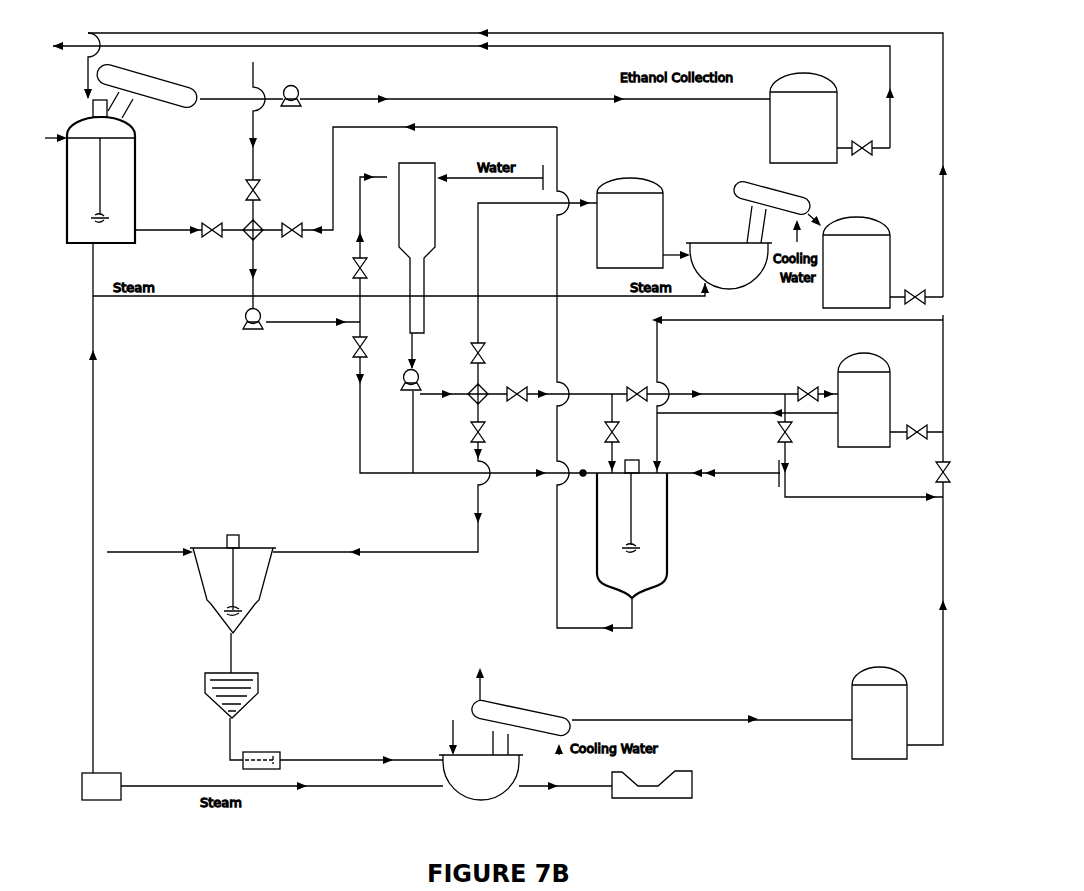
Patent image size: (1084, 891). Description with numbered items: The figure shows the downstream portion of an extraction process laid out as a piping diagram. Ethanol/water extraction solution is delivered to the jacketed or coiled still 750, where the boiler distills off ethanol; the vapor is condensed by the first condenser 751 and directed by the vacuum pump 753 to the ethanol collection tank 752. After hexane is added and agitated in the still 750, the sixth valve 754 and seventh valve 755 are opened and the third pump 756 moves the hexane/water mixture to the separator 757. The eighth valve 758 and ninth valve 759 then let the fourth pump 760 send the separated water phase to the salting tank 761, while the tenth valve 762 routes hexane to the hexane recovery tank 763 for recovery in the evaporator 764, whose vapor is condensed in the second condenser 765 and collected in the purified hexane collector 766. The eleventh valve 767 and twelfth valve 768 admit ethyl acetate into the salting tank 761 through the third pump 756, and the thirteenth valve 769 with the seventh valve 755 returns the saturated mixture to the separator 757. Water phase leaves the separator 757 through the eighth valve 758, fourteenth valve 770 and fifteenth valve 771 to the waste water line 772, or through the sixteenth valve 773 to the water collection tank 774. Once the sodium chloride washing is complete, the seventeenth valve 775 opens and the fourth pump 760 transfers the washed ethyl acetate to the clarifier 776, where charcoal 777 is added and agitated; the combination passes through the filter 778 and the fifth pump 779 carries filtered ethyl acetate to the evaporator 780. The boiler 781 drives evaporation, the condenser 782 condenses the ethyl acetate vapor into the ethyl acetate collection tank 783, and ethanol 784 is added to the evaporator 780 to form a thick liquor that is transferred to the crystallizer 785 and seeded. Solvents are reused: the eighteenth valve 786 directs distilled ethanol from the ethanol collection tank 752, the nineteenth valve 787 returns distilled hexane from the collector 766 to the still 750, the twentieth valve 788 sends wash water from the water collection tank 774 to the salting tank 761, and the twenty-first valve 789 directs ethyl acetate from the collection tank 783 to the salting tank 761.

The jacketed or coiled still 750 is at (101, 171).
The first condenser 751 is at (147, 86).
The ethanol collection tank 752 is at (803, 118).
The vacuum pump 753 is at (305, 94).
The sixth valve 754 is at (206, 223).
The seventh valve 755 is at (346, 262).
The third pump 756 is at (242, 318).
The separator 757 is at (417, 248).
The eighth valve 758 is at (522, 386).
The ninth valve 759 is at (600, 426).
The fourth pump 760 is at (393, 383).
The salting tank 761 is at (632, 529).
The tenth valve 762 is at (490, 350).
The hexane recovery tank 763 is at (630, 223).
The evaporator 764 is at (729, 266).
The second condenser 765 is at (772, 198).
The purified hexane collector 766 is at (856, 262).
The eleventh valve 767 is at (264, 185).
The twelfth valve 768 is at (342, 347).
The thirteenth valve 769 is at (293, 223).
The fourteenth valve 770 is at (627, 386).
The fifteenth valve 771 is at (767, 426).
The waste water line 772 is at (862, 471).
The sixteenth valve 773 is at (807, 383).
The water collection tank 774 is at (864, 400).
The seventeenth valve 775 is at (495, 433).
The clarifier 776 is at (233, 584).
The charcoal 777 is at (150, 543).
The filter 778 is at (207, 695).
The fifth pump 779 is at (257, 749).
The evaporator 780 is at (481, 777).
The boiler 781 is at (101, 786).
The condenser 782 is at (521, 716).
The ethyl acetate collection tank 783 is at (879, 713).
The ethanol 784 is at (432, 732).
The crystallizer 785 is at (652, 786).
The eighteenth valve 786 is at (867, 154).
The nineteenth valve 787 is at (915, 288).
The twentieth valve 788 is at (930, 427).
The twenty-first valve 789 is at (930, 472).